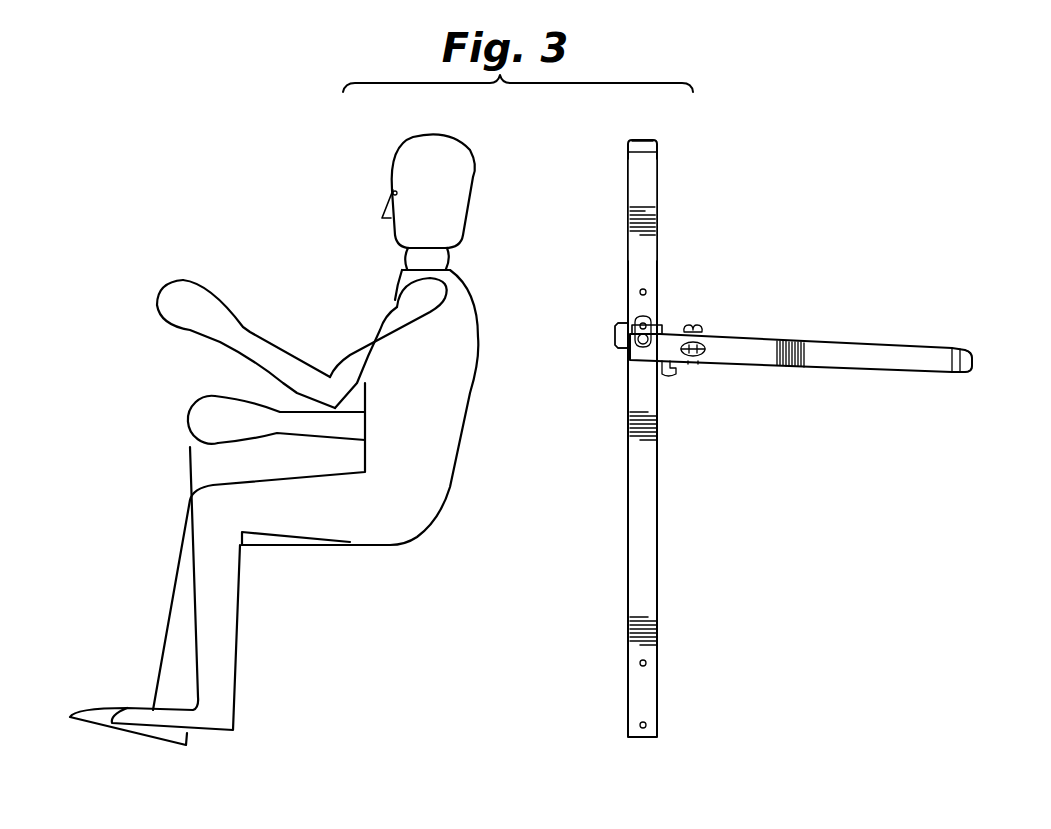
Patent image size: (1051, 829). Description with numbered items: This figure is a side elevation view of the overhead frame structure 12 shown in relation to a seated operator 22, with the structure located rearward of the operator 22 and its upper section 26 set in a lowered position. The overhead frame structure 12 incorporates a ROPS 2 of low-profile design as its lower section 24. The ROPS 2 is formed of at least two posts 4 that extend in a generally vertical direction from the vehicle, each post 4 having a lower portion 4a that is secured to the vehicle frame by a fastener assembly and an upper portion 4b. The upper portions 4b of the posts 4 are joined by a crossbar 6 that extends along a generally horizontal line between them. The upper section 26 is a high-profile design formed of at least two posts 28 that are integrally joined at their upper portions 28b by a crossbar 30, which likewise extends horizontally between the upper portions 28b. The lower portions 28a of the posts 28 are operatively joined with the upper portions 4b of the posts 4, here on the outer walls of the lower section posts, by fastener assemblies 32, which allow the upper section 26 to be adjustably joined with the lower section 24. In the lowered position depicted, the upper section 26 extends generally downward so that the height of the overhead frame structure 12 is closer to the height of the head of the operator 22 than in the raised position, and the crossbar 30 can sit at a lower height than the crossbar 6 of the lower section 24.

The ROPS 2 is at (676, 456).
The post 4 is at (628, 402).
The lower portion of post 4a is at (637, 690).
The upper portion of post 4b is at (638, 165).
The crossbar 6 is at (643, 140).
The overhead frame structure 12 is at (788, 166).
The operator 22 is at (410, 152).
The lower section 24 is at (676, 480).
The upper section 26 is at (826, 322).
The post 28 is at (820, 365).
The lower portion of post 28a is at (672, 340).
The upper portion of post 28b is at (955, 368).
The crossbar 30 is at (972, 355).
The fastener assembly 32 is at (620, 337).